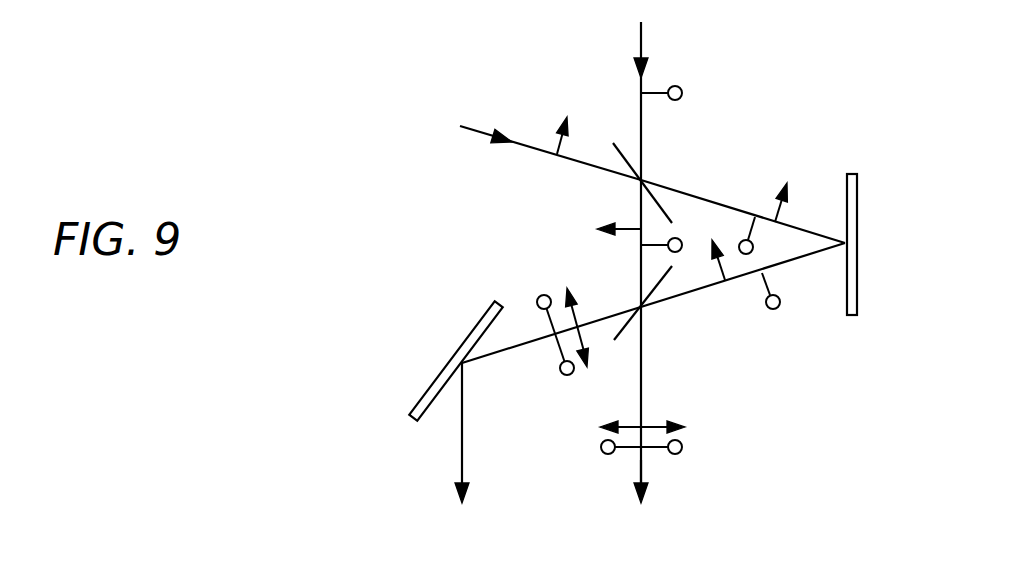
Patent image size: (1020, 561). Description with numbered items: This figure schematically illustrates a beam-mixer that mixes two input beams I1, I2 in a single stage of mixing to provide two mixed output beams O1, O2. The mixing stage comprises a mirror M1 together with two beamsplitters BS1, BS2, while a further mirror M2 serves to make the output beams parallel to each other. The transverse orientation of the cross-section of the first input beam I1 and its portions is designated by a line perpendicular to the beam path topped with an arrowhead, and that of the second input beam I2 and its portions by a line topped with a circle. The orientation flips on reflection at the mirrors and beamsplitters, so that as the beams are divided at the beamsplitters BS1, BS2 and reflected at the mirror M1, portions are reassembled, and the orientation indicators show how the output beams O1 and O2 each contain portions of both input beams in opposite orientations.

The input beam I1 is at (550, 135).
The input beam I2 is at (649, 50).
The output beam O1 is at (476, 435).
The output beam O2 is at (656, 484).
The beamsplitter BS1 is at (622, 155).
The beamsplitter BS2 is at (615, 343).
The mirror M1 is at (857, 191).
The mirror M2 is at (478, 322).